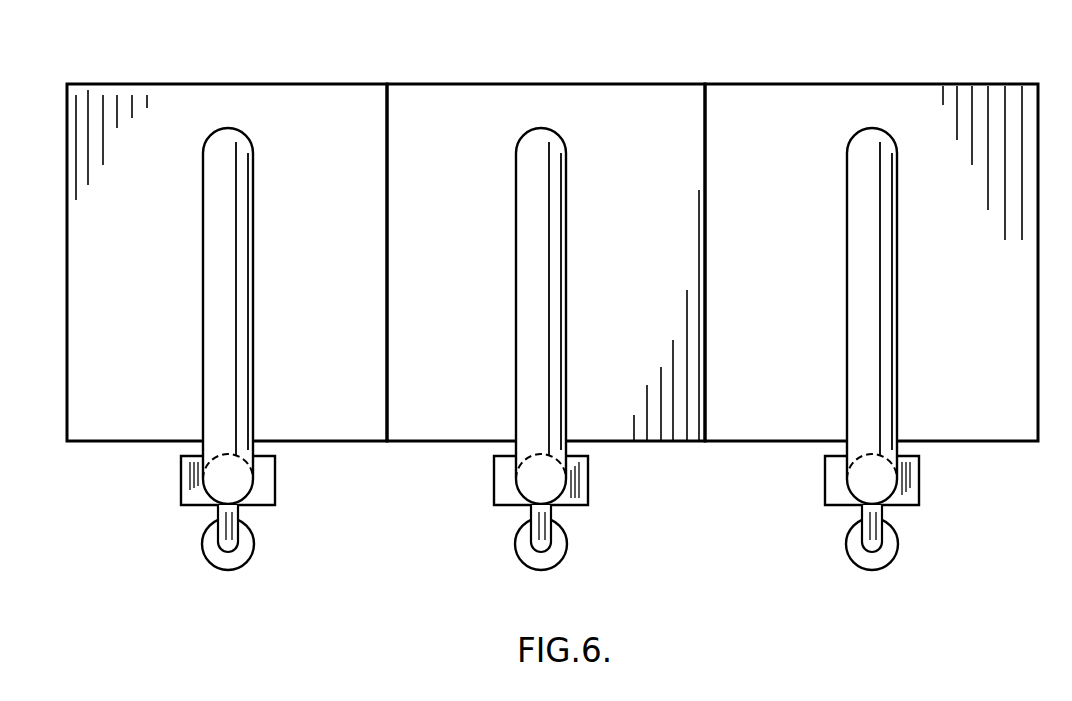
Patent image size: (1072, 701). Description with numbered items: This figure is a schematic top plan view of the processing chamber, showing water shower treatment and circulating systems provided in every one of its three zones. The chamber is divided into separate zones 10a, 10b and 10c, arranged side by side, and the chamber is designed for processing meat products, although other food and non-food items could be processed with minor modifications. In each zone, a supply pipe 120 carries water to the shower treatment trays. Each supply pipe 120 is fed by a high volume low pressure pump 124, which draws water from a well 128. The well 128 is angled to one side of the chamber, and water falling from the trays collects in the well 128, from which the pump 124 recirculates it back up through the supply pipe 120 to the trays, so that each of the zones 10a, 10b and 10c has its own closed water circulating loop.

The first zone 10a is at (167, 84).
The second zone 10b is at (523, 84).
The third zone 10c is at (862, 84).
The supply pipe 120 is at (203, 199).
The high volume low pressure pump 124 is at (181, 478).
The well 128 is at (254, 543).